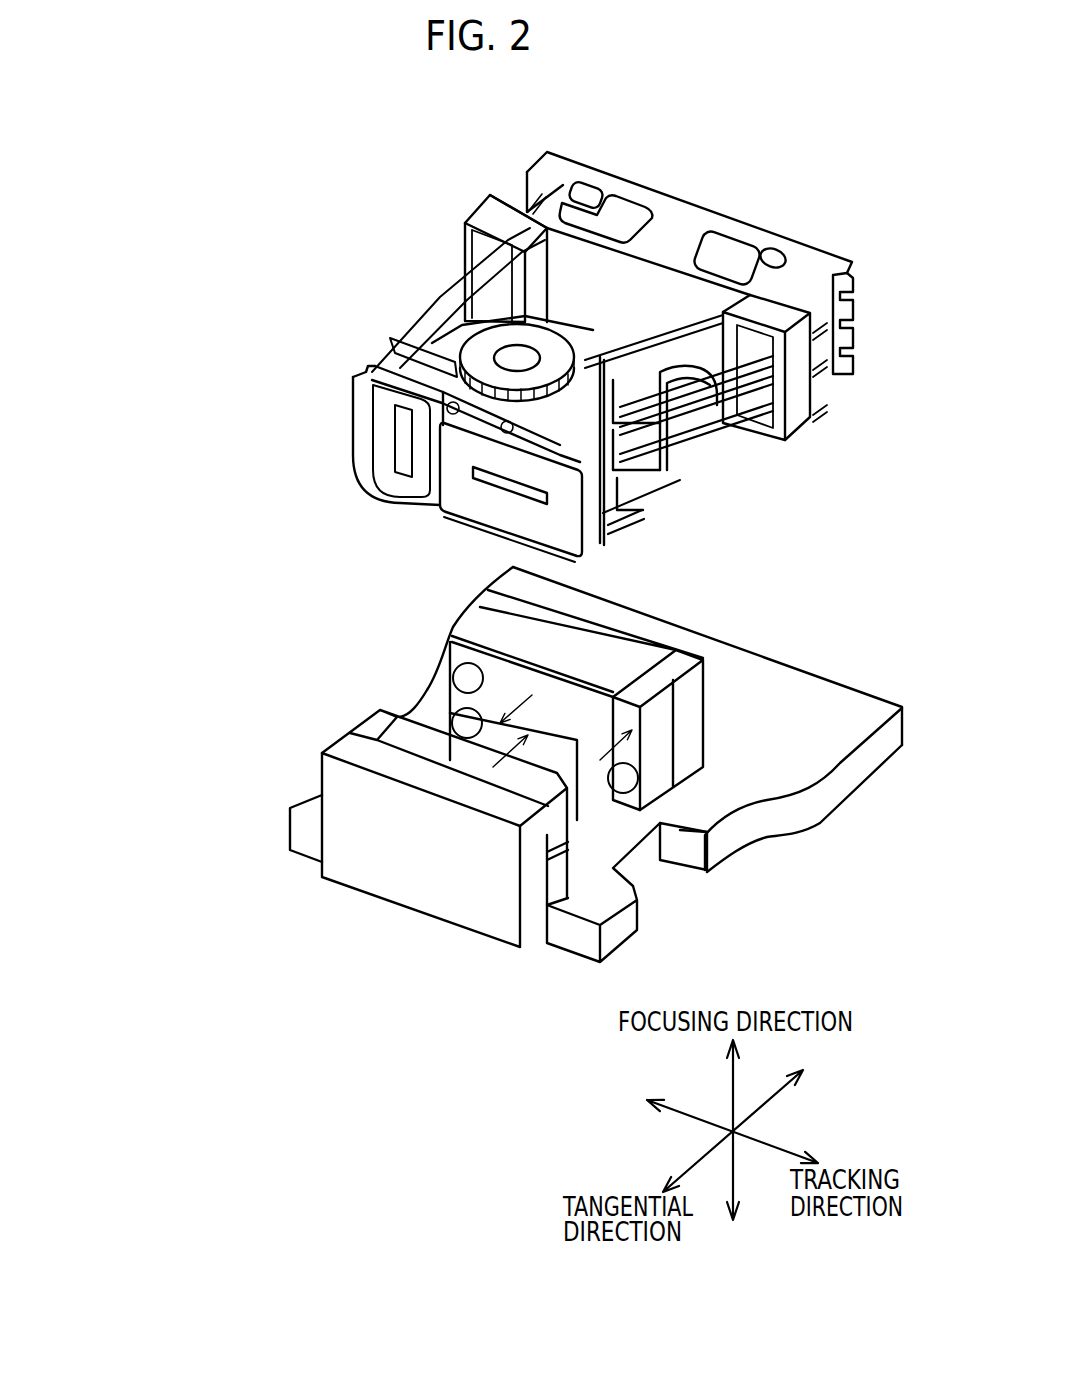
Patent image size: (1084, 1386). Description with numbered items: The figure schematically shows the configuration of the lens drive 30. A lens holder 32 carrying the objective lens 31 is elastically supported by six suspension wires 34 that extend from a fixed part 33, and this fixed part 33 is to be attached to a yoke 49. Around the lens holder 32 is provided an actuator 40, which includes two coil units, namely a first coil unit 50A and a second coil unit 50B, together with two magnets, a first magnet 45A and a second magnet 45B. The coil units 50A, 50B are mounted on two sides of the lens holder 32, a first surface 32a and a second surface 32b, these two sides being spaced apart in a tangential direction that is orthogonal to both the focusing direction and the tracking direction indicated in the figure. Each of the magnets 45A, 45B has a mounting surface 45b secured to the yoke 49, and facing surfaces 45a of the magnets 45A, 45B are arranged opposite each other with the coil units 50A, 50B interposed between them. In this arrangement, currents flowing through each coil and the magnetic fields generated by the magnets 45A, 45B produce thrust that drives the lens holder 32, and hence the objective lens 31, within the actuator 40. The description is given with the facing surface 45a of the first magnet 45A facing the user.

The lens drive 30 is at (720, 100).
The objective lens 31 is at (630, 513).
The lens holder 32 is at (578, 560).
The first surface 32a is at (717, 395).
The second surface 32b is at (515, 450).
The fixed part 33 is at (810, 255).
The suspension wires 34 is at (696, 420).
The actuator 40 is at (128, 194).
The first magnet 45A is at (447, 644).
The second magnet 45B is at (357, 722).
The facing surface 45a is at (590, 783).
The mounting surface 45b is at (617, 640).
The yoke 49 is at (810, 810).
The first coil unit 50A is at (555, 313).
The second coil unit 50B is at (353, 403).